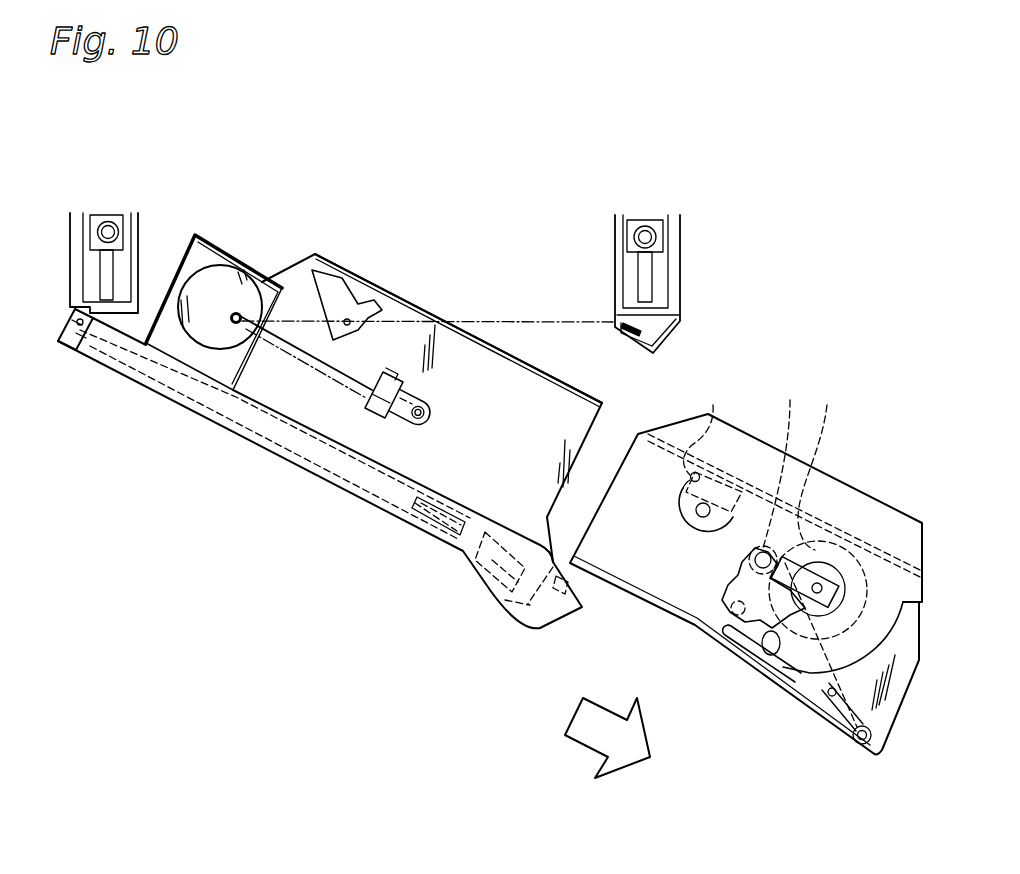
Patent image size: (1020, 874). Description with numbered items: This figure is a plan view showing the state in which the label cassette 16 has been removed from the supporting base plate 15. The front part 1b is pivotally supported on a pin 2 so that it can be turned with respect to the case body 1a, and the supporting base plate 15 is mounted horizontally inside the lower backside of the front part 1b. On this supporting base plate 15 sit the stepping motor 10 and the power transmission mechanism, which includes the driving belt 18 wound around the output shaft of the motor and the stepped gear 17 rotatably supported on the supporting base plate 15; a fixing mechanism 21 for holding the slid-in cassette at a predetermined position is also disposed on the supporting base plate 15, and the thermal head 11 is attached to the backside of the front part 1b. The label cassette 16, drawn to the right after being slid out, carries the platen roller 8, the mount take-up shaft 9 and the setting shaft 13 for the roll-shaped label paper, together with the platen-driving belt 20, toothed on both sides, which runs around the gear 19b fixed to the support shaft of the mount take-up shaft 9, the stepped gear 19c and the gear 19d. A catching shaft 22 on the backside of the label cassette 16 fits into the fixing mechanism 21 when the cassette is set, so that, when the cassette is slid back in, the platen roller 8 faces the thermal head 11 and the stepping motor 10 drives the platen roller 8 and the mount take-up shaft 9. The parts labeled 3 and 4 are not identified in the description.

The case body 1a is at (694, 262).
The front part 1b is at (327, 483).
The pin 2 is at (78, 352).
The engaging portion 3 is at (628, 334).
The guide slider 4 is at (95, 218).
The platen roller 8 is at (862, 746).
The mount take-up shaft 9 is at (843, 557).
The stepping motor 10 is at (220, 287).
The thermal head 11 is at (483, 588).
The setting shaft 13 is at (708, 540).
The supporting base plate 15 is at (487, 380).
The label cassette 16 is at (930, 537).
The stepped gear 17 is at (430, 412).
The driving belt 18 is at (302, 362).
The gear 19b is at (828, 557).
The stepped gear 19c is at (790, 400).
The stepped gear 19d is at (732, 608).
The platen-driving belt 20 is at (772, 657).
The fixing mechanism 21 is at (363, 298).
The catching shaft 22 is at (713, 405).